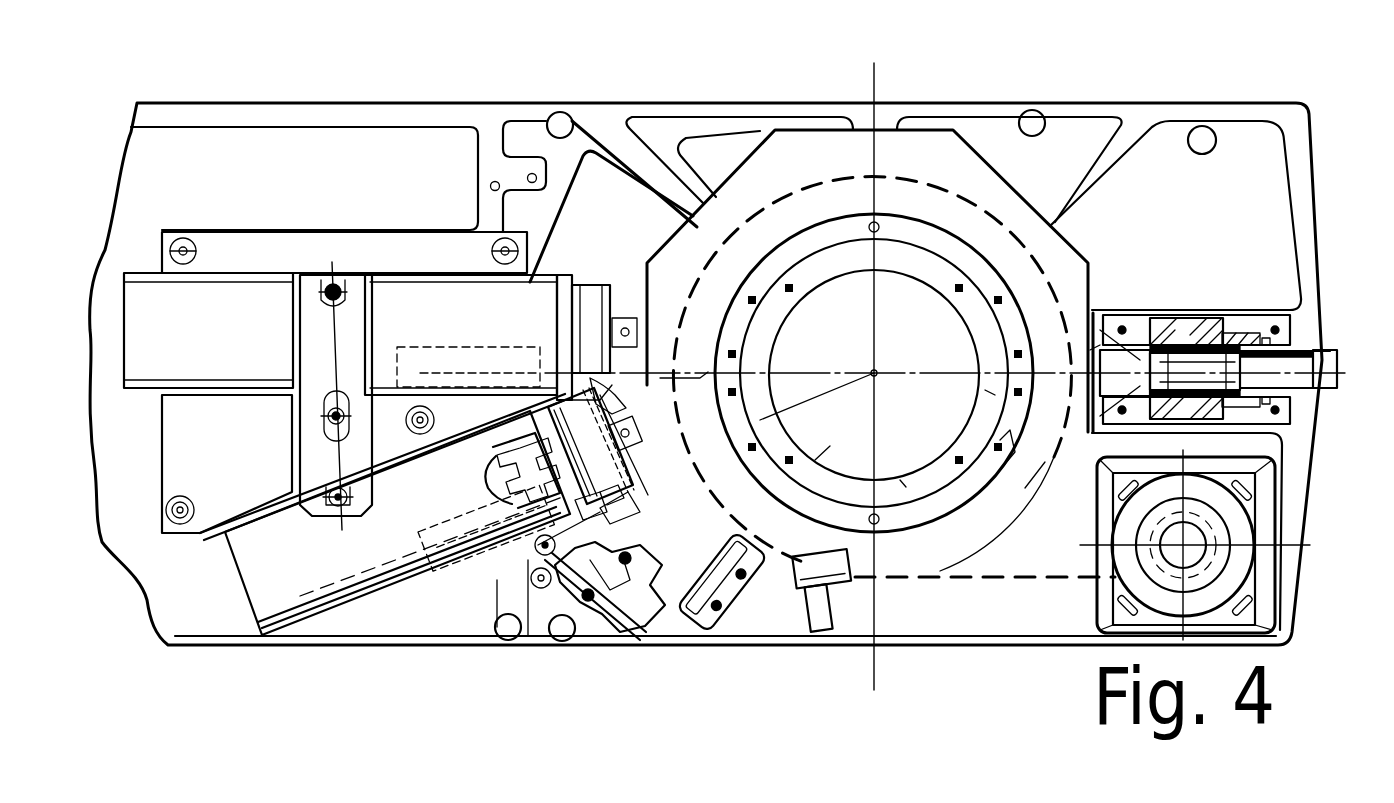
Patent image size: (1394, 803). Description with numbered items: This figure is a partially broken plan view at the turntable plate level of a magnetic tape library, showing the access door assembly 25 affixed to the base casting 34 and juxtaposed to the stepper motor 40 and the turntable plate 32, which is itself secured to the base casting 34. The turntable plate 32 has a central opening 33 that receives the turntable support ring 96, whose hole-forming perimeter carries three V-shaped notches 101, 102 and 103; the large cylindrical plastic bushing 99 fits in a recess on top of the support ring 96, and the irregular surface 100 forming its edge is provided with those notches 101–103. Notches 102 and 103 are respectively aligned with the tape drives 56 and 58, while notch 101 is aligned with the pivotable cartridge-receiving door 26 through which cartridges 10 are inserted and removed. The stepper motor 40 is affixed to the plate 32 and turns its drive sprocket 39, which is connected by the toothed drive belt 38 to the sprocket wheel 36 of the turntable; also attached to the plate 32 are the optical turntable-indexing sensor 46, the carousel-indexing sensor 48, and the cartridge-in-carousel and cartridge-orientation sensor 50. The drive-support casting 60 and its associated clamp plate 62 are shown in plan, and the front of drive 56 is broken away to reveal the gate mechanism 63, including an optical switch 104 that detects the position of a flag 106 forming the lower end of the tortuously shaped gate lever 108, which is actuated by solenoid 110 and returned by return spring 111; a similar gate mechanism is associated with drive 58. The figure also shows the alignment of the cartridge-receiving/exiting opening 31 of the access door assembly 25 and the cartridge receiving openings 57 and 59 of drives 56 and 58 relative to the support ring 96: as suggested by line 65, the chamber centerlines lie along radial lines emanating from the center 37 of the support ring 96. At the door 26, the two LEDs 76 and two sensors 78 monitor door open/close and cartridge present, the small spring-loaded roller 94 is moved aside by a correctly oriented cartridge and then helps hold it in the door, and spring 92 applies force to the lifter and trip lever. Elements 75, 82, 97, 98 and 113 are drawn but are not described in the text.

The cartridge 10 is at (482, 360).
The access door assembly 25 is at (1154, 307).
The cartridge-receiving door 26 is at (1333, 352).
The cartridge-receiving/exiting opening 31 is at (1090, 350).
The turntable plate 32 is at (1084, 264).
The central opening 33 is at (995, 395).
The base casting 34 is at (1318, 218).
The sprocket wheel 36 is at (992, 512).
The center 37 is at (874, 373).
The toothed drive belt 38 is at (1022, 580).
The drive sprocket 39 is at (1130, 528).
The stepper motor 40 is at (1298, 540).
The turntable-indexing sensor 46 is at (830, 596).
The carousel-indexing sensor 48 is at (712, 612).
The cartridge-in-carousel and cartridge-orientation sensor 50 is at (585, 620).
The drive 56 is at (380, 552).
The cartridge receiving opening 57 is at (517, 550).
The drive 58 is at (222, 350).
The cartridge receiving opening 59 is at (586, 345).
The drive-support casting 60 is at (235, 454).
The clamp plate 62 is at (335, 359).
The gate mechanism 63 is at (700, 368).
The line 65 is at (688, 393).
The bearing 75 is at (1208, 316).
The LED 76 is at (1186, 347).
The sensor 78 is at (1186, 428).
The hub 82 is at (1092, 392).
The spring 92 is at (1230, 428).
The spring-loaded roller 94 is at (1250, 340).
The turntable support ring 96 is at (1029, 449).
The ring lug 97 is at (1023, 479).
The ring inner edge 98 is at (906, 487).
The cylindrical plastic bushing 99 is at (932, 280).
The surface 100 is at (830, 446).
The V-shaped notch 101 is at (990, 378).
The V-shaped notch 102 is at (790, 412).
The V-shaped notch 103 is at (770, 378).
The optical switch 104 is at (510, 500).
The flag 106 is at (505, 466).
The gate lever 108 is at (618, 420).
The solenoid 110 is at (640, 455).
The return spring 111 is at (630, 478).
The slide 113 is at (622, 510).